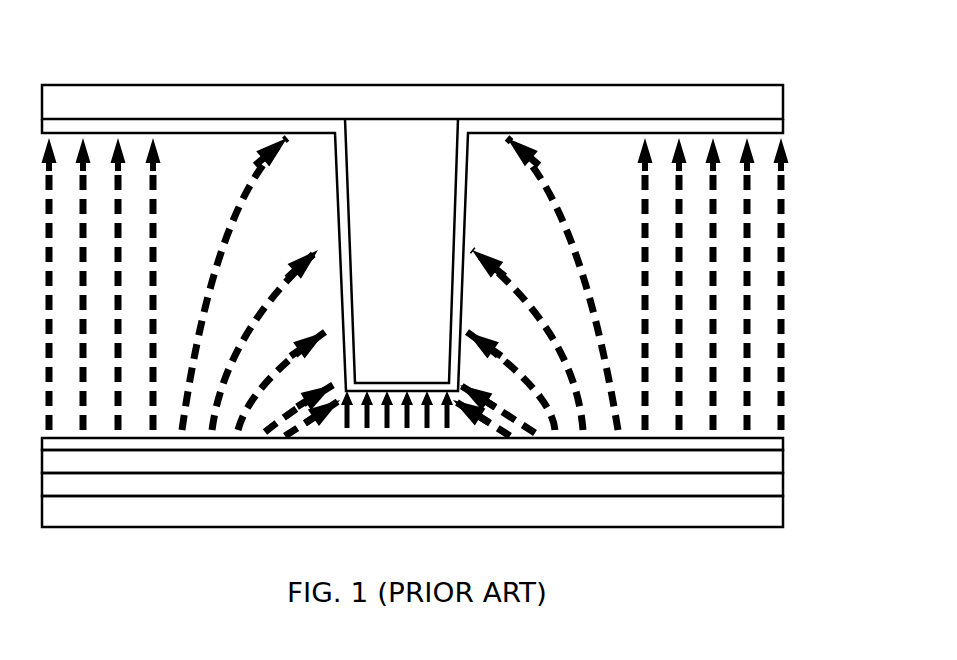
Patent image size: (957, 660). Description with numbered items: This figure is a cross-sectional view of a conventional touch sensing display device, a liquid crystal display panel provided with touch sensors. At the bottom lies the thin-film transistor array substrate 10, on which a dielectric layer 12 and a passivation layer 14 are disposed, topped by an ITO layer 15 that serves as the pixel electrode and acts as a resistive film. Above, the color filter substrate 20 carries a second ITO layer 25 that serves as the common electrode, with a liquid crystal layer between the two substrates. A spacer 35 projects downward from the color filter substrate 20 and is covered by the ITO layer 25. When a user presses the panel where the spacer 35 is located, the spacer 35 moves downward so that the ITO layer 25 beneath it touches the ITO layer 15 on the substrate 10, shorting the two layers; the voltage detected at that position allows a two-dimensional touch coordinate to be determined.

The thin-film transistor array substrate 10 is at (762, 513).
The dielectric layer 12 is at (762, 483).
The passivation layer 14 is at (765, 465).
The ITO layer 15 is at (765, 445).
The color filter substrate 20 is at (765, 106).
The ITO layer 25 is at (765, 127).
The spacer 35 is at (408, 149).